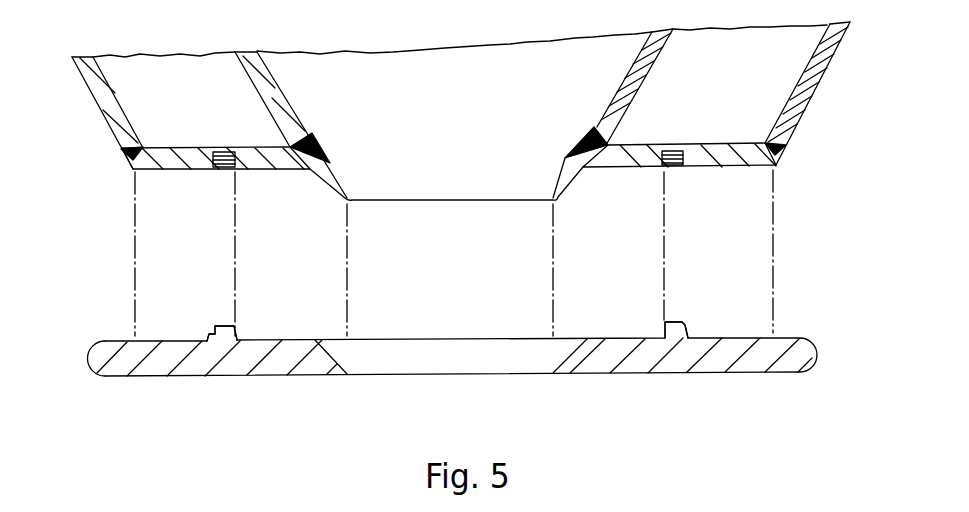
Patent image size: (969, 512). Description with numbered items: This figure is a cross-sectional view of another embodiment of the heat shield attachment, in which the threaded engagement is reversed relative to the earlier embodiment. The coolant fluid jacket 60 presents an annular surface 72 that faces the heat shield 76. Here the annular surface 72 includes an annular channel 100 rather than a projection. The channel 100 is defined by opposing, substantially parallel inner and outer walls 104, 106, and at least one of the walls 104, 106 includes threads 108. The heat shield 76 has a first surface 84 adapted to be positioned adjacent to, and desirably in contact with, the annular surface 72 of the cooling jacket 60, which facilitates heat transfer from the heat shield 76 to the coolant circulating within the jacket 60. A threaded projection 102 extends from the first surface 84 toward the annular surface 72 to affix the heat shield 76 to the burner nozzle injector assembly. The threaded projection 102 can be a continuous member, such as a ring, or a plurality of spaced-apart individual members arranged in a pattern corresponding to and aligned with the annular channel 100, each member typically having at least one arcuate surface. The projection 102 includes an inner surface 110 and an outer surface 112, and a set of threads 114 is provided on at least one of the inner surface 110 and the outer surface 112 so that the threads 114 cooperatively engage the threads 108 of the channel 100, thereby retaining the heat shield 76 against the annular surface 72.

The coolant fluid jacket 60 is at (98, 107).
The annular surface 72 is at (168, 176).
The threads 108 is at (220, 171).
The annular channel 100 is at (229, 182).
The inner wall 104 is at (668, 168).
The outer wall 106 is at (672, 167).
The heat shield 76 is at (707, 377).
The first surface 84 is at (108, 340).
The inner surface 110 is at (235, 333).
The threads 114 is at (210, 336).
The outer surface 112 is at (688, 330).
The threaded projection 102 is at (681, 309).